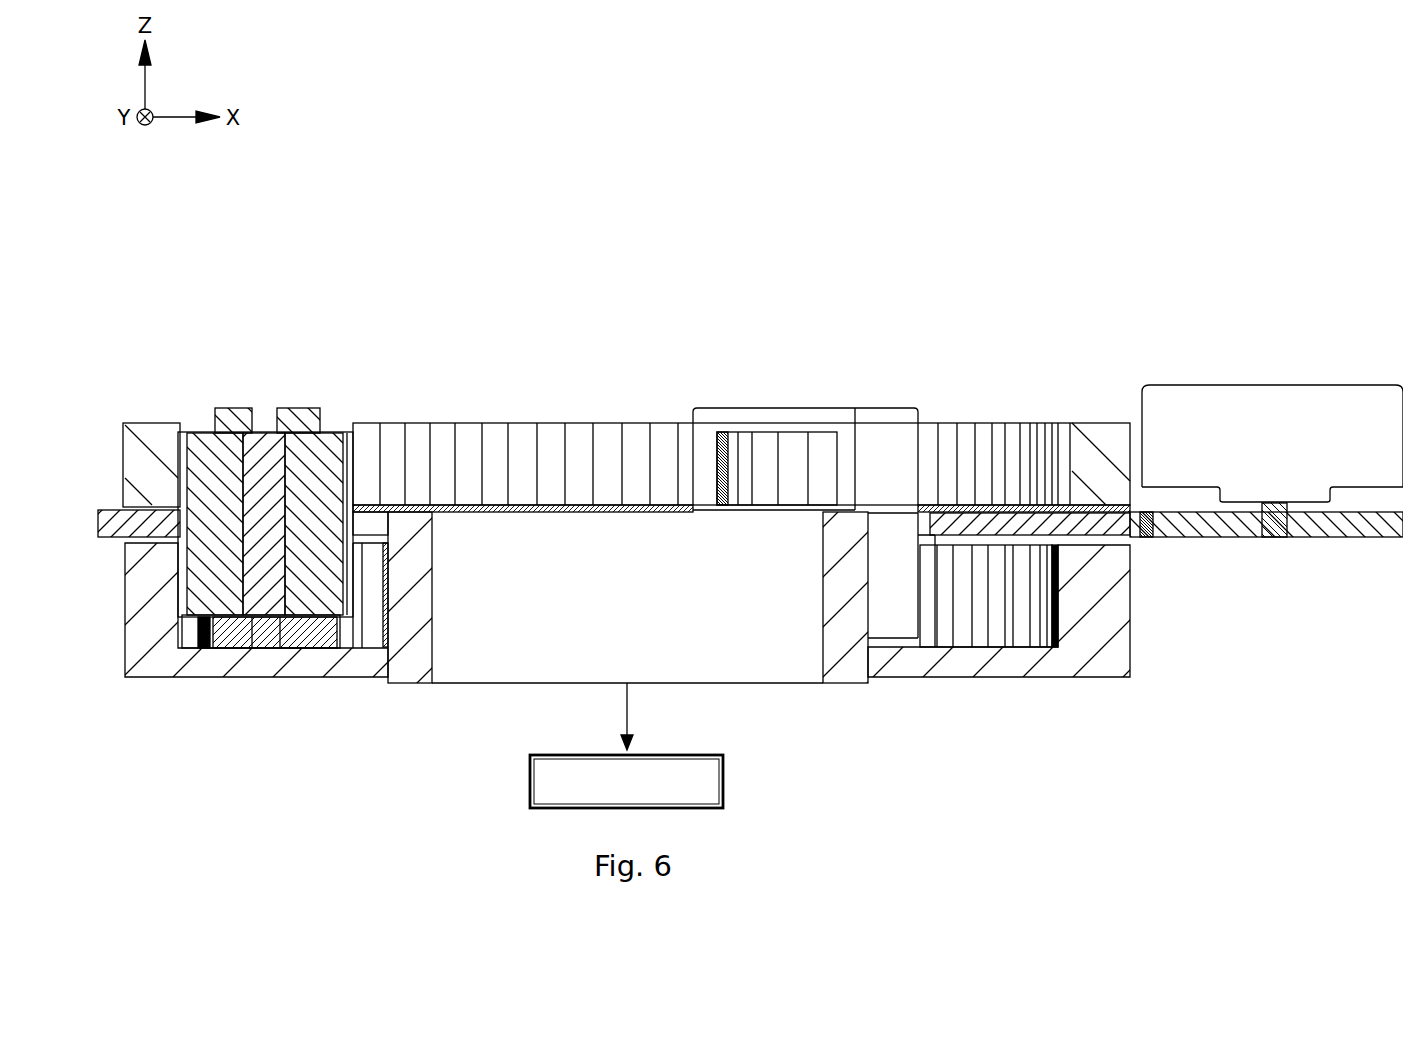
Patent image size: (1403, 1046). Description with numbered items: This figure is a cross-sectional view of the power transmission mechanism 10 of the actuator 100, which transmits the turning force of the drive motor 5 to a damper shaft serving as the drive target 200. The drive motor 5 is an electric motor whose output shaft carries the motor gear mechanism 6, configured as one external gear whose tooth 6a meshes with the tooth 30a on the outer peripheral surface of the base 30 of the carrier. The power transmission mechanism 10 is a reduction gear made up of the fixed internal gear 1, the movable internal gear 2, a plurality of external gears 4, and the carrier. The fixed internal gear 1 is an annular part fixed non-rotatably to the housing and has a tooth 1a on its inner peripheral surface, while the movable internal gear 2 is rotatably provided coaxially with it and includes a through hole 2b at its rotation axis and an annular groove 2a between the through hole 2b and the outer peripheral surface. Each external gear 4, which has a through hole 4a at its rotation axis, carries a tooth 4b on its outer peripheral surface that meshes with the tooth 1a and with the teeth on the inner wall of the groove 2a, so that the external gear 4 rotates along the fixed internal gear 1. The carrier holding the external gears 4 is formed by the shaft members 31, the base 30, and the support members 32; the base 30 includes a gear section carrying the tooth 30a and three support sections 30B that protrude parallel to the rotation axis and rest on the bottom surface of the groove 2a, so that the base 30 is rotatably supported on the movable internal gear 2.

The actuator 100 is at (748, 425).
The power transmission mechanism 10 is at (652, 508).
The fixed internal gear 1 is at (672, 413).
The tooth 1a is at (567, 462).
The support member 32 is at (218, 432).
The movable internal gear 2 is at (759, 633).
The groove 2a is at (867, 620).
The through hole 2b is at (823, 620).
The base 30 is at (652, 534).
The tooth 30a is at (1147, 513).
The support section 30B is at (233, 640).
The shaft member 31 is at (267, 620).
The external gear 4 is at (295, 534).
The through hole 4a is at (255, 455).
The tooth 4b is at (353, 457).
The drive motor 5 is at (1253, 385).
The motor gear mechanism 6 is at (1266, 565).
The tooth 6a is at (1402, 537).
The drive target 200 is at (530, 773).